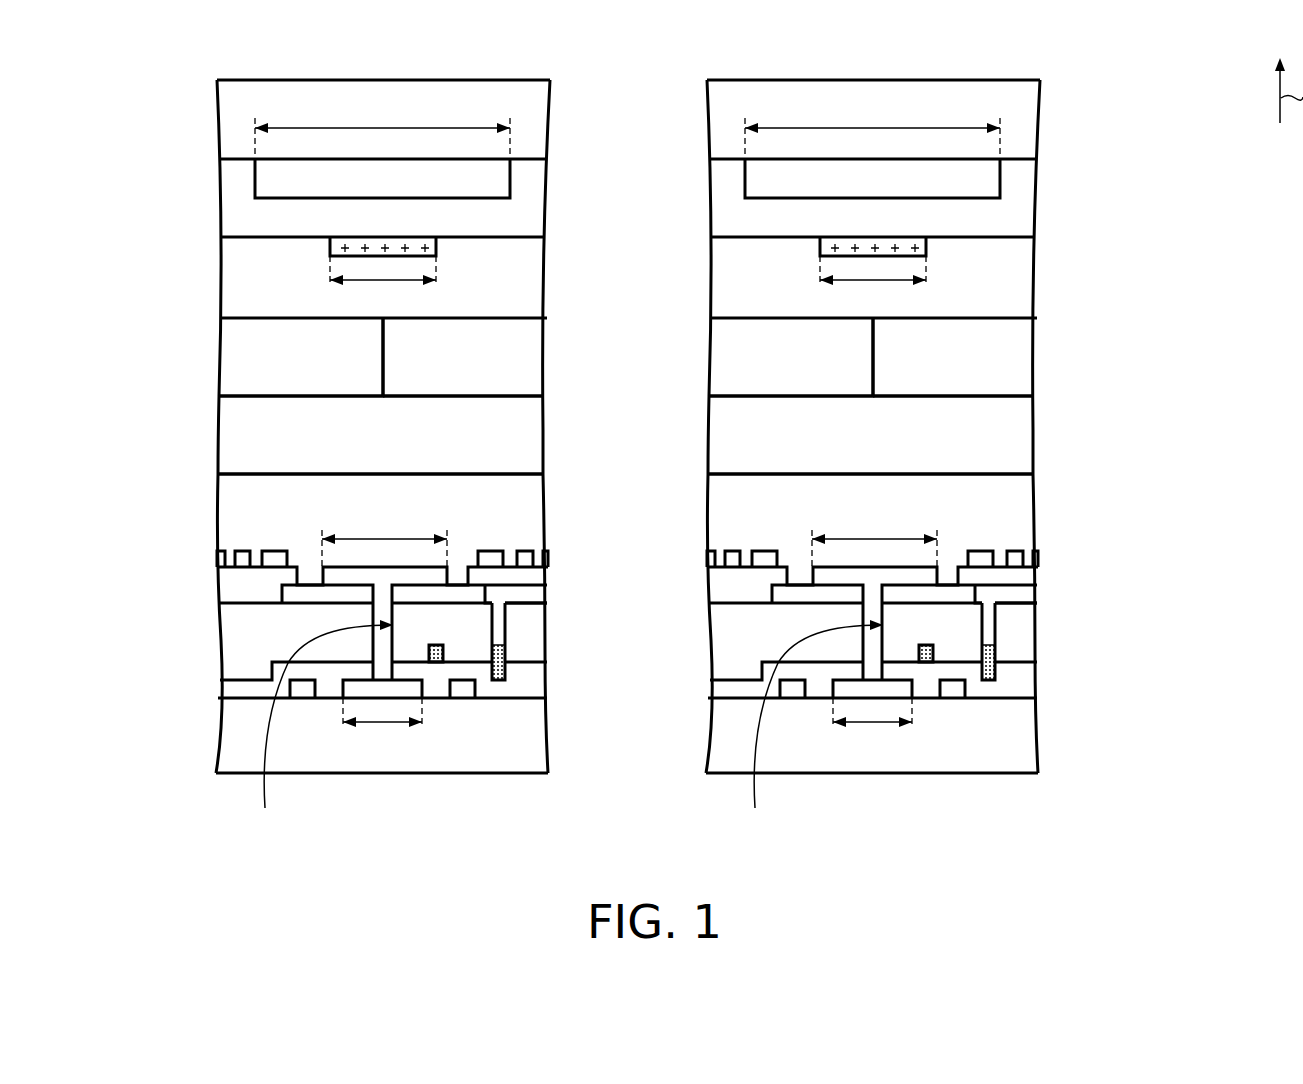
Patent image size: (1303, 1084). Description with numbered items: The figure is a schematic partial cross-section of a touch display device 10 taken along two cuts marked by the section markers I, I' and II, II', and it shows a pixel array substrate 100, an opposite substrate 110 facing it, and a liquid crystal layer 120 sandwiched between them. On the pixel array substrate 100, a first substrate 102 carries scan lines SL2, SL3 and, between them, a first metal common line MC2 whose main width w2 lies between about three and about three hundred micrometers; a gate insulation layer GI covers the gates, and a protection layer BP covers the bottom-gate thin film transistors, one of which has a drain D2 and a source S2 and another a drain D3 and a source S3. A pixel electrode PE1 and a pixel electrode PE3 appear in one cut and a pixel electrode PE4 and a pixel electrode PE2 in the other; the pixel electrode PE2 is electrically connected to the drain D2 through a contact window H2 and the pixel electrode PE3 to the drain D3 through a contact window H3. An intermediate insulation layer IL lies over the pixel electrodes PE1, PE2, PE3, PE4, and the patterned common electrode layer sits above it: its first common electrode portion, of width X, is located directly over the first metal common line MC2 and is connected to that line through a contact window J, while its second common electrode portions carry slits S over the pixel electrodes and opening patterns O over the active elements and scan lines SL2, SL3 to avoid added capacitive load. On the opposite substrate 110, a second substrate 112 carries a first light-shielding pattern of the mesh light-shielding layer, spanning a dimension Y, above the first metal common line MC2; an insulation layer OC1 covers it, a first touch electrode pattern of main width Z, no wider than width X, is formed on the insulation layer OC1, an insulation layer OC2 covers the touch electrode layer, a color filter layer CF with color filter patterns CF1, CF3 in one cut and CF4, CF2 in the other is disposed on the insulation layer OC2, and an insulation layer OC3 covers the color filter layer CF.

The touch display device 10 is at (1302, 878).
The pixel array substrate 100 is at (81, 548).
The first substrate 102 is at (237, 733).
The opposite substrate 110 is at (81, 80).
The second substrate 112 is at (235, 118).
The liquid crystal layer 120 is at (254, 492).
The insulation layer OC1 is at (245, 220).
The insulation layer OC2 is at (240, 296).
The color filter layer CF is at (133, 335).
The color filter pattern CF1 is at (248, 374).
The color filter pattern CF2 is at (1010, 376).
The color filter pattern CF3 is at (400, 343).
The color filter pattern CF4 is at (855, 343).
The insulation layer OC3 is at (242, 434).
The intermediate insulation layer IL is at (218, 577).
The pixel electrode PE1 is at (222, 595).
The pixel electrode PE2 is at (1040, 595).
The pixel electrode PE3 is at (523, 594).
The pixel electrode PE4 is at (723, 593).
The protection layer BP is at (237, 661).
The gate insulation layer GI is at (240, 688).
The contact window H2 is at (984, 617).
The contact window H3 is at (494, 617).
The drain D2 is at (995, 662).
The drain D3 is at (503, 663).
The source S2 is at (927, 663).
The source S3 is at (437, 663).
The scan line SL2 is at (303, 690).
The scan line SL3 is at (463, 692).
The first metal common line MC2 is at (358, 690).
The contact window J is at (569, 731).
The opening pattern O is at (950, 562).
The slit S is at (1026, 560).
The width of first common electrode portion X is at (629, 535).
The width Y is at (627, 126).
The main width of first touch electrode pattern Z is at (628, 285).
The main width of first metal common line w2 is at (627, 727).
The section line I is at (215, 797).
The section line I' is at (564, 797).
The section line II is at (705, 797).
The section line II' is at (1042, 797).